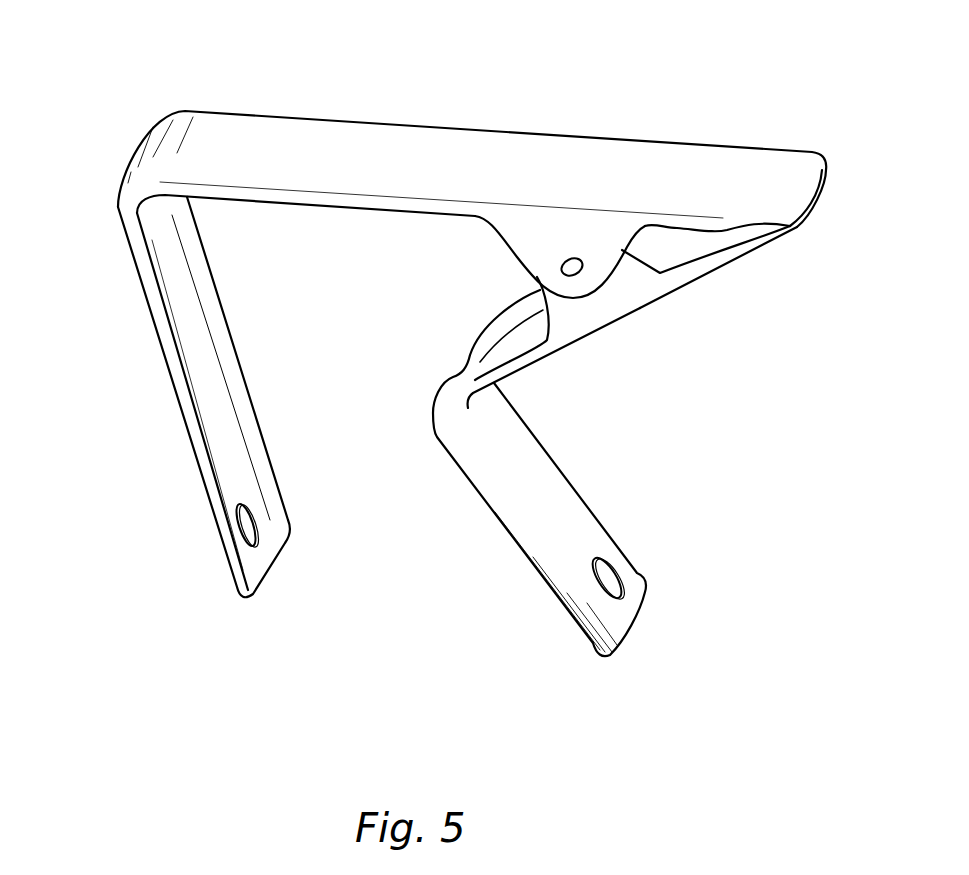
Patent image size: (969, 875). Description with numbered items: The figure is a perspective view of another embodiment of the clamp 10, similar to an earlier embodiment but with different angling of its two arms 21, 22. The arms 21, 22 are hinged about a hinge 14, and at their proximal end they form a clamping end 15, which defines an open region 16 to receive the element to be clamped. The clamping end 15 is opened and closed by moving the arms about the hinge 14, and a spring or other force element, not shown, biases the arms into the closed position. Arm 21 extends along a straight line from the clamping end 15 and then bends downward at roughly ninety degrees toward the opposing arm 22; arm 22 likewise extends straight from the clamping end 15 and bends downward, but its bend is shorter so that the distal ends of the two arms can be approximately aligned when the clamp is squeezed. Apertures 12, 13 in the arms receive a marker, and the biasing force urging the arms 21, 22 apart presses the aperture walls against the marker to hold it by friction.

The clamp 10 is at (348, 135).
The aperture 12 is at (257, 527).
The aperture 13 is at (620, 582).
The hinge 14 is at (567, 250).
The clamping end 15 is at (785, 177).
The open region 16 is at (670, 247).
The arm 21 is at (133, 272).
The arm 22 is at (530, 570).